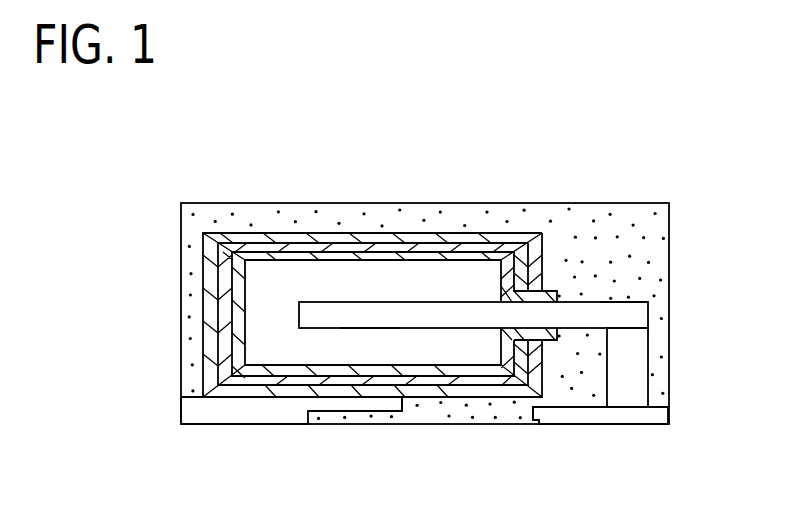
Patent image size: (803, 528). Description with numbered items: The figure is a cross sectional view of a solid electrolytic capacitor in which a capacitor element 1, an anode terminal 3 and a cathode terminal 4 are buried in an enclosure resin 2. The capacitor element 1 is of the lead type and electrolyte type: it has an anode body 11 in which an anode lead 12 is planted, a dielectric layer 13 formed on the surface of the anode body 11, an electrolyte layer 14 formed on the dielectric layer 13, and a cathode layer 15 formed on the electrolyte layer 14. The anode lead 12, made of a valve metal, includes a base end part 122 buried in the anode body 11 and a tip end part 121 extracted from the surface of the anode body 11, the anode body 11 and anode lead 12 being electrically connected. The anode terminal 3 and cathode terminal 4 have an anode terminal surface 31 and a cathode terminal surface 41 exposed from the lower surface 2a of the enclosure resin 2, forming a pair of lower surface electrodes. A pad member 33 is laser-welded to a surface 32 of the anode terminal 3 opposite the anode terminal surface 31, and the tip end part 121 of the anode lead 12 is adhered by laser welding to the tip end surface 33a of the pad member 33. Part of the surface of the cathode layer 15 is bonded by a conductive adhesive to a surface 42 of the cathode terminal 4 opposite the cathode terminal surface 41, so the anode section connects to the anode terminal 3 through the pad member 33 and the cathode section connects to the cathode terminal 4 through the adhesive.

The capacitor element 1 is at (547, 147).
The enclosure resin 2 is at (241, 210).
The lower surface 2a is at (417, 426).
The anode terminal 3 is at (638, 413).
The cathode terminal 4 is at (248, 413).
The anode body 11 is at (312, 283).
The anode lead 12 is at (340, 317).
The dielectric layer 13 is at (380, 257).
The electrolyte layer 14 is at (425, 248).
The cathode layer 15 is at (452, 240).
The anode terminal surface 31 is at (555, 426).
The surface of the anode terminal 32 is at (584, 403).
The pad member 33 is at (622, 367).
The tip end surface 33a is at (632, 328).
The cathode terminal surface 41 is at (202, 426).
The surface of the cathode terminal 42 is at (288, 394).
The tip end part 121 is at (634, 300).
The base end part 122 is at (372, 331).